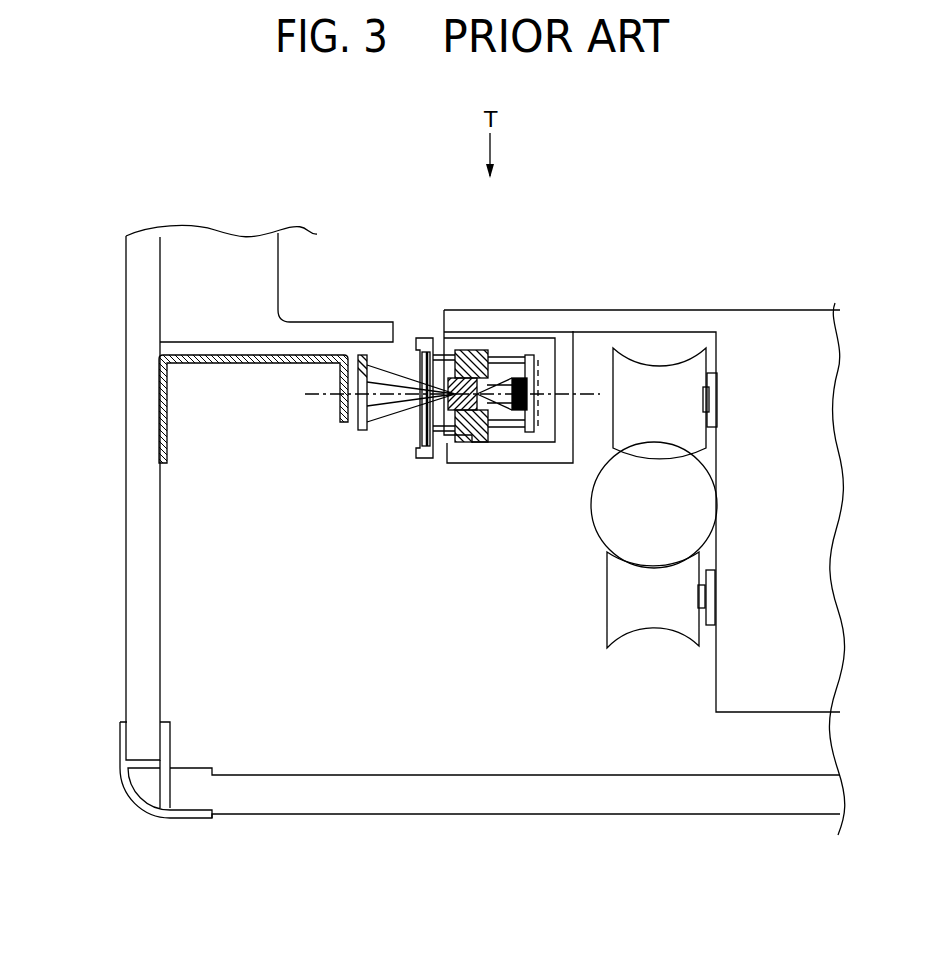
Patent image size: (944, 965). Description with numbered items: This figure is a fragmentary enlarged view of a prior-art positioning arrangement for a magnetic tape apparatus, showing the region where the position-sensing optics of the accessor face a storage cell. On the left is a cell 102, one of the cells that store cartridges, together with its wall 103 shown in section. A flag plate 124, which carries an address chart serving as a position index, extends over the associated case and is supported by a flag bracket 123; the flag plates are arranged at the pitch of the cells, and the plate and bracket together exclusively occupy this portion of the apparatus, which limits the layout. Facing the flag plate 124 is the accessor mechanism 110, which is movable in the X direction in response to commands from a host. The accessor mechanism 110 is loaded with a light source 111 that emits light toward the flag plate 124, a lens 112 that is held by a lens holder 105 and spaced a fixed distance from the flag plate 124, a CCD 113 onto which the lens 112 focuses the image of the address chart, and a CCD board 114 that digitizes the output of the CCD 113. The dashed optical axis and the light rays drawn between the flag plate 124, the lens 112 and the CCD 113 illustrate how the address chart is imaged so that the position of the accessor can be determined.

The cell 102 is at (203, 247).
The side wall 103 is at (140, 425).
The lens holder 105 is at (470, 370).
The accessor mechanism 110 is at (770, 333).
The light source 111 is at (427, 338).
The lens 112 is at (470, 444).
The CCD 113 is at (517, 413).
The CCD board 114 is at (530, 367).
The flag bracket 123 is at (252, 363).
The flag plate 124 is at (362, 432).